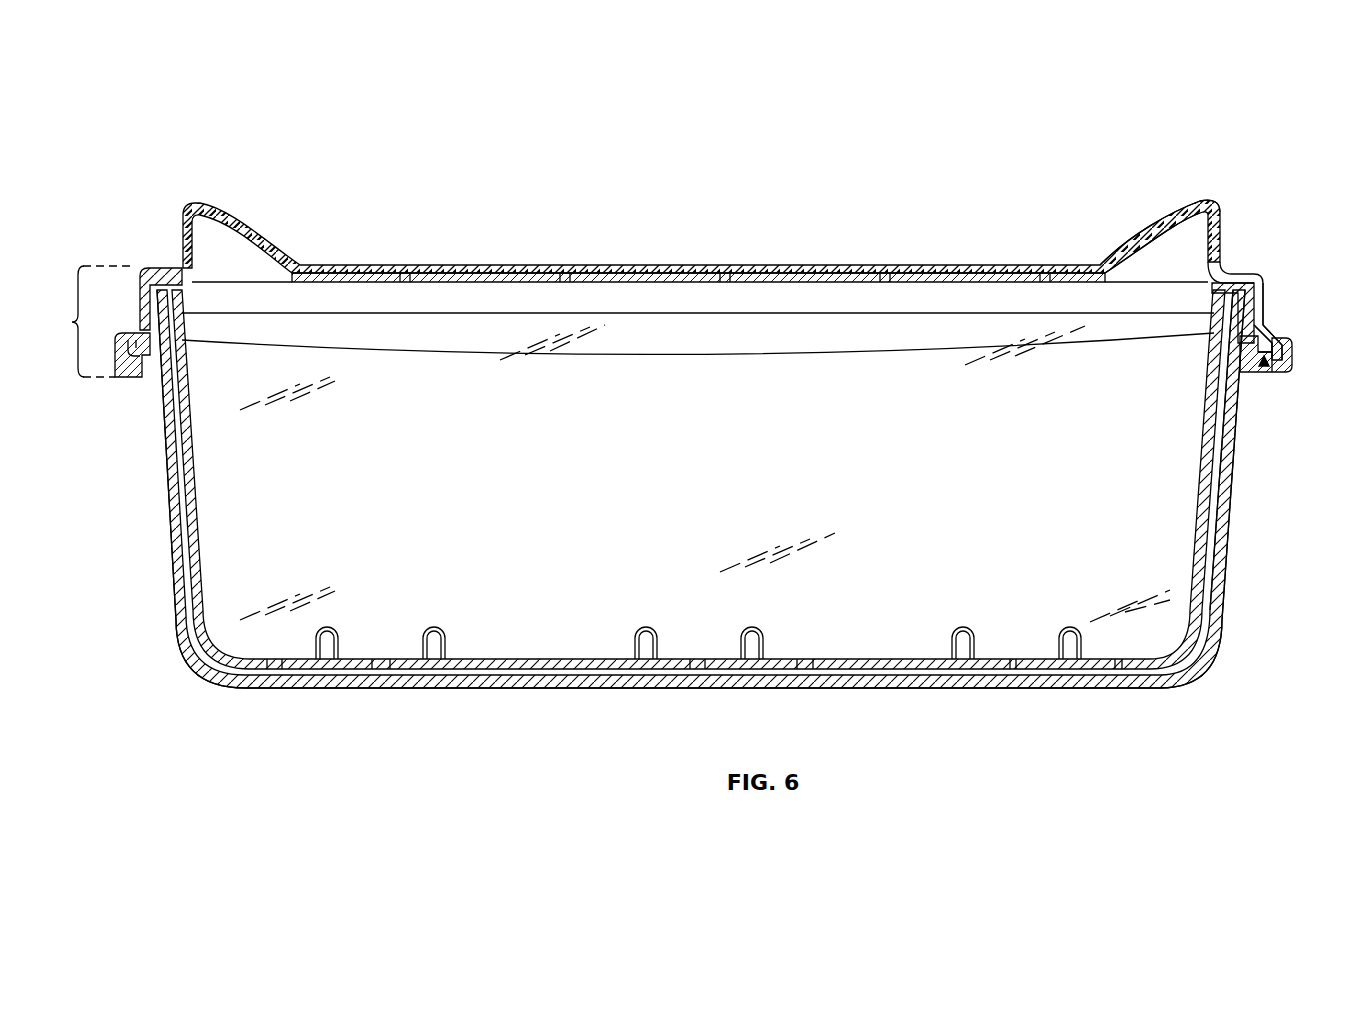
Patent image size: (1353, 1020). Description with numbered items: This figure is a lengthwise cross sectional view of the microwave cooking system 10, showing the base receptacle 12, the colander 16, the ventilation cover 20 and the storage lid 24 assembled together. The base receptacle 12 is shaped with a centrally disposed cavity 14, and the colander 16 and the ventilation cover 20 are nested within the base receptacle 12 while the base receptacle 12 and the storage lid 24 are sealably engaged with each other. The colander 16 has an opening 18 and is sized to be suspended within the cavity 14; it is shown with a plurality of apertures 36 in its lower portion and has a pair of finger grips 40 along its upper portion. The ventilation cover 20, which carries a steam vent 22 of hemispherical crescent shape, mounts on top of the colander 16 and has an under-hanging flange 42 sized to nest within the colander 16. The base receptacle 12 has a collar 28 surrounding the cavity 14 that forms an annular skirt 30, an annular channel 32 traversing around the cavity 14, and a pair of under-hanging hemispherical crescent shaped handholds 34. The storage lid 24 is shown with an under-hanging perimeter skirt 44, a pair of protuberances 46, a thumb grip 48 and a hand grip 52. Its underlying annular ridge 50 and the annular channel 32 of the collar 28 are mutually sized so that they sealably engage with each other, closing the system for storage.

The microwave cooking system 10 is at (200, 152).
The base receptacle 12 is at (1217, 577).
The centrally disposed cavity 14 is at (1213, 530).
The colander 16 is at (1208, 503).
The opening 18 is at (1190, 452).
The ventilation cover 20 is at (780, 276).
The steam vent 22 is at (1180, 222).
The storage lid 24 is at (720, 268).
The collar 28 is at (1243, 307).
The annular skirt 30 is at (460, 330).
The annular channel 32 is at (1265, 368).
The under-hanging hemispherical crescent shaped handhold 34 is at (1287, 358).
The aperture 36 is at (963, 650).
The finger grip 40 is at (1238, 277).
The under-hanging flange 42 is at (622, 290).
The under-hanging perimeter skirt 44 is at (93, 321).
The protuberance 46 is at (1140, 243).
The thumb grip 48 is at (1270, 290).
The underlying annular ridge 50 is at (1266, 338).
The hand grip 52 is at (1283, 362).